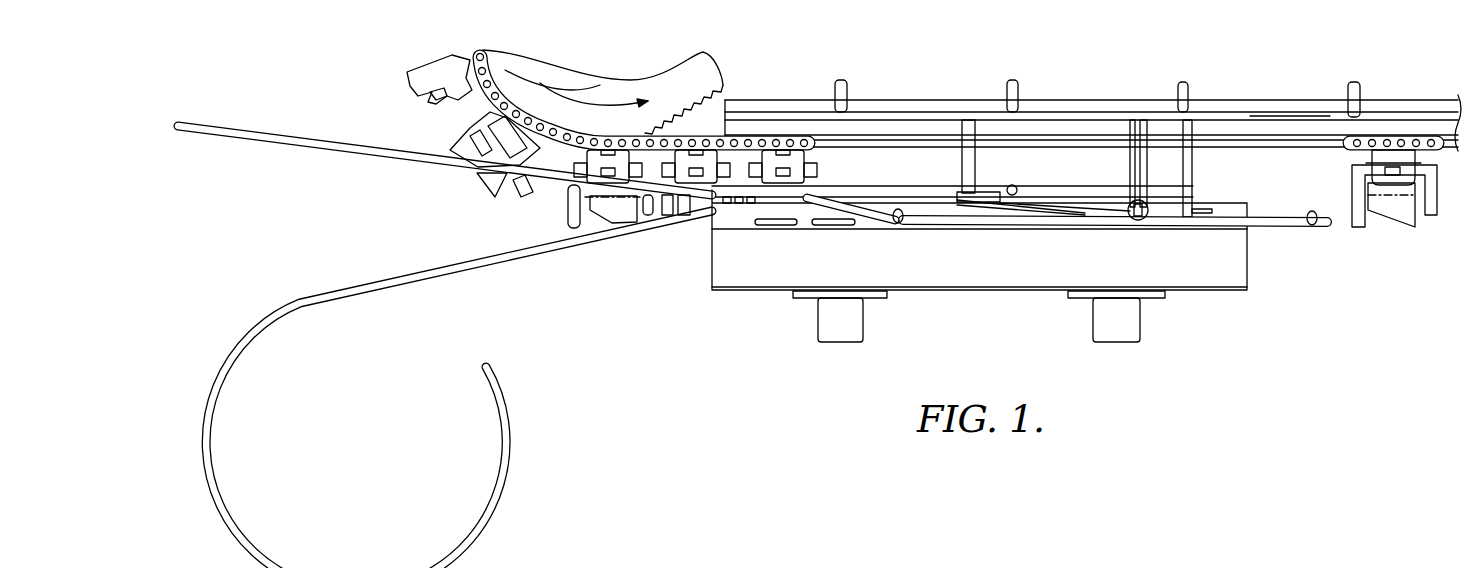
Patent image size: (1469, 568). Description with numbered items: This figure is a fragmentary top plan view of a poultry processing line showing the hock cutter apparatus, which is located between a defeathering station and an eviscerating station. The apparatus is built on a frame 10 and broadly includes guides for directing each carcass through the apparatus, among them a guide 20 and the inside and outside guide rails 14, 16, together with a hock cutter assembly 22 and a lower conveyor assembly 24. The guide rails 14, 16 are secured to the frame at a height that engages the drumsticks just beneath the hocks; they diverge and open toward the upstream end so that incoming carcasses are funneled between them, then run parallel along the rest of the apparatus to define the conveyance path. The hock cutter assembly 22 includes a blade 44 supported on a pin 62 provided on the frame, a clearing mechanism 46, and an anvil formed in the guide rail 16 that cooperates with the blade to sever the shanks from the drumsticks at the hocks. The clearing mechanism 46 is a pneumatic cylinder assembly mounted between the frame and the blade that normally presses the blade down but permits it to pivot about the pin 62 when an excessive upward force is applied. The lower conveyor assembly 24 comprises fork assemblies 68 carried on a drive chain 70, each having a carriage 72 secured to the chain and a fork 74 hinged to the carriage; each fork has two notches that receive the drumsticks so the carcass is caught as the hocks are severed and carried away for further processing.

The frame 10 is at (1067, 95).
The inside guide rail 14 is at (298, 141).
The outside guide rail 16 is at (247, 345).
The guide 20 is at (923, 224).
The hock cutter assembly 22 is at (1030, 222).
The lower conveyor assembly 24 is at (640, 72).
The blade 44 is at (1082, 214).
The clearing mechanism 46 is at (1138, 221).
The pin 62 is at (972, 158).
The fork assembly 68 is at (452, 136).
The drive chain 70 is at (1423, 137).
The carriage 72 is at (1380, 157).
The fork 74 is at (1395, 212).